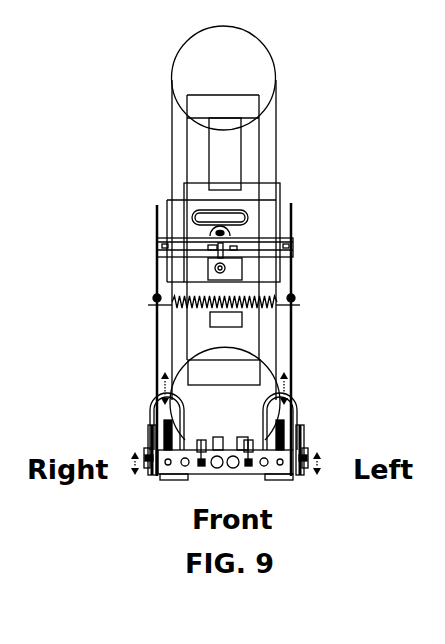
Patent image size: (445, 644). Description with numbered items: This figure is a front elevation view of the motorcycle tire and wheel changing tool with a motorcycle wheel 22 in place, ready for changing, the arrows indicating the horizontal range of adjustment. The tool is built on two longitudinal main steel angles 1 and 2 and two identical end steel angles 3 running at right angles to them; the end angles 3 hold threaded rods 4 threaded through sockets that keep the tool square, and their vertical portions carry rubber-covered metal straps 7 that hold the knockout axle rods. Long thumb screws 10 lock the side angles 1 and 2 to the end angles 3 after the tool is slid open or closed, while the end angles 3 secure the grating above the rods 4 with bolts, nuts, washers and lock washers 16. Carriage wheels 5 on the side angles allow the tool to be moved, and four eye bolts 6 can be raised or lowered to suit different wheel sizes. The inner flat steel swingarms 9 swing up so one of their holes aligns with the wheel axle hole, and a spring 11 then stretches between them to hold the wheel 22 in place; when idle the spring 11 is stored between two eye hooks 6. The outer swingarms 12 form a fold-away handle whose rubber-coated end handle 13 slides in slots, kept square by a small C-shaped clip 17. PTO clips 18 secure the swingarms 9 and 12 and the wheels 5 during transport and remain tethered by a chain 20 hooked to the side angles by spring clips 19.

The main steel angle 1 is at (298, 418).
The main steel angle 2 is at (153, 427).
The end steel angle 3 is at (293, 476).
The threaded rod 4 is at (216, 469).
The carriage wheel 5 is at (170, 477).
The eye bolt 6 is at (172, 402).
The metal strap with rubber covering 7 is at (200, 468).
The flat steel swingarm 9 is at (157, 213).
The long thumb screw 10 is at (170, 423).
The spring 11 is at (268, 306).
The flat steel swingarm 12 is at (157, 290).
The end handle 13 is at (203, 211).
The bolts, nuts, washers, and lock washers 16 is at (217, 437).
The C-shaped clip 17 is at (157, 238).
The PTO clip 18 is at (148, 437).
The spring clip 19 is at (148, 452).
The chain 20 is at (150, 456).
The wheel 22 is at (185, 70).